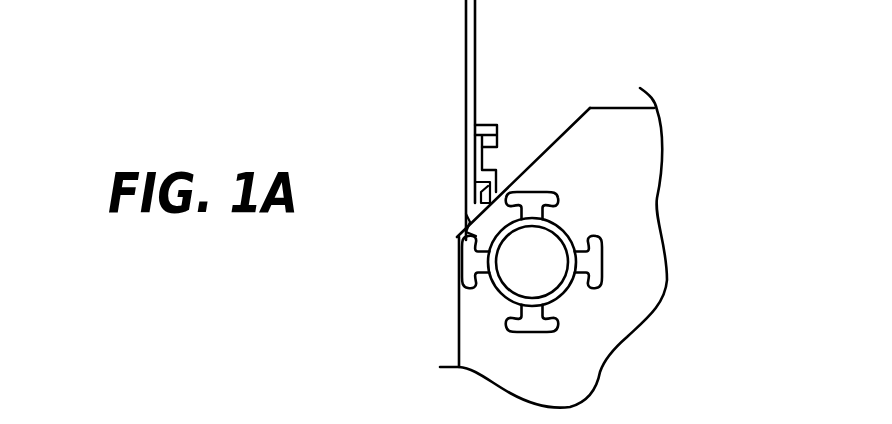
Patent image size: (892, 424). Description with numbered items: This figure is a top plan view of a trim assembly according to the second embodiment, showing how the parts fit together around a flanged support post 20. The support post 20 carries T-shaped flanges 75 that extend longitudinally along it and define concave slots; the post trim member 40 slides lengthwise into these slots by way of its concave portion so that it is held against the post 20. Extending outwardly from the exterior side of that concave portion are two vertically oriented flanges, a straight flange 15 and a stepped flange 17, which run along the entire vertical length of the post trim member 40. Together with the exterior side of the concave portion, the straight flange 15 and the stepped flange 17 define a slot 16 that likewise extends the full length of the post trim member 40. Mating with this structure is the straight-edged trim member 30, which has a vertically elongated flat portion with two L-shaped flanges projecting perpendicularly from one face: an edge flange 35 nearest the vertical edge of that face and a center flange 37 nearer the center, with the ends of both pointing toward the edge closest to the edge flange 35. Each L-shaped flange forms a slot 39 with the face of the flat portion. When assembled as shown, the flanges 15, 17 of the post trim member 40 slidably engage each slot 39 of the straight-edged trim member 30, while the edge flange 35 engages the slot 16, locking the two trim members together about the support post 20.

The straight-edged trim member 30 is at (466, 74).
The slot 39 is at (478, 125).
The post trim member 40 is at (522, 140).
The center flange 37 is at (498, 134).
The stepped flange 17 is at (474, 146).
The slot 16 is at (477, 184).
The straight flange 15 is at (478, 197).
The edge flange 35 is at (490, 173).
The T-shaped flanges 75 is at (538, 206).
The flanged support post 20 is at (477, 303).